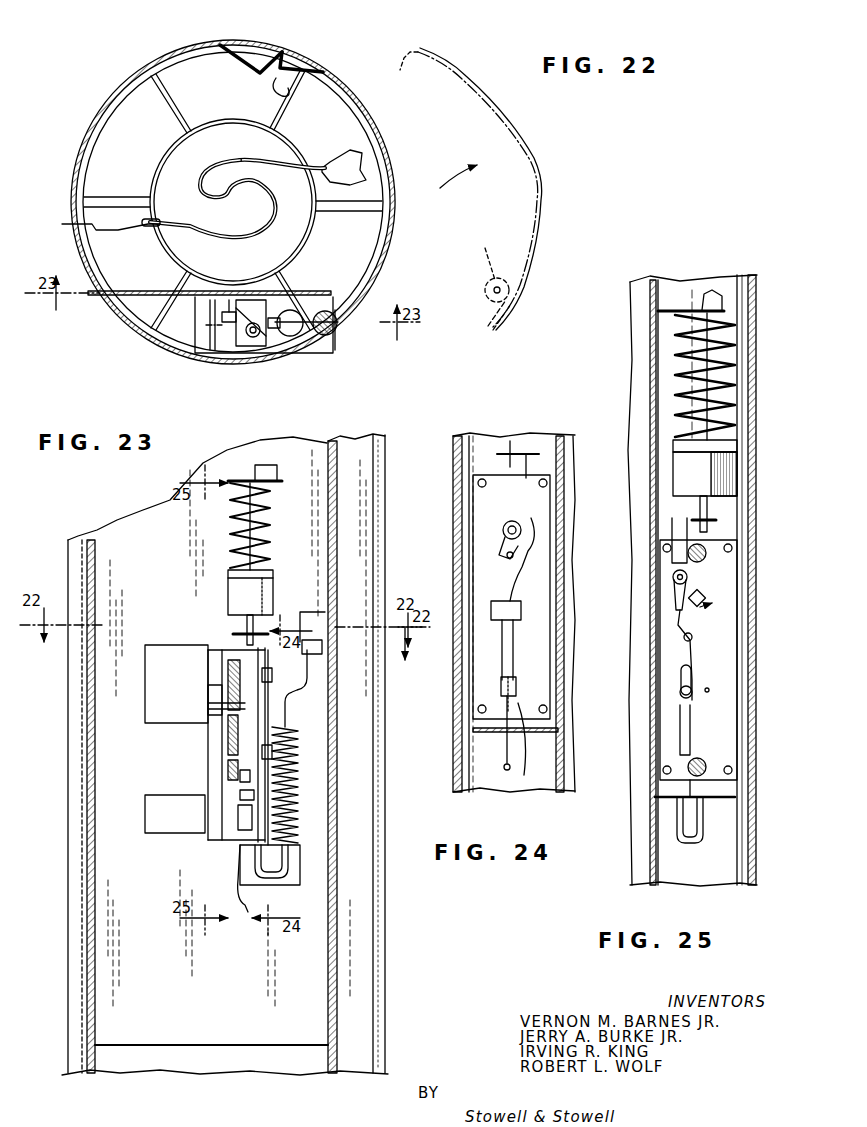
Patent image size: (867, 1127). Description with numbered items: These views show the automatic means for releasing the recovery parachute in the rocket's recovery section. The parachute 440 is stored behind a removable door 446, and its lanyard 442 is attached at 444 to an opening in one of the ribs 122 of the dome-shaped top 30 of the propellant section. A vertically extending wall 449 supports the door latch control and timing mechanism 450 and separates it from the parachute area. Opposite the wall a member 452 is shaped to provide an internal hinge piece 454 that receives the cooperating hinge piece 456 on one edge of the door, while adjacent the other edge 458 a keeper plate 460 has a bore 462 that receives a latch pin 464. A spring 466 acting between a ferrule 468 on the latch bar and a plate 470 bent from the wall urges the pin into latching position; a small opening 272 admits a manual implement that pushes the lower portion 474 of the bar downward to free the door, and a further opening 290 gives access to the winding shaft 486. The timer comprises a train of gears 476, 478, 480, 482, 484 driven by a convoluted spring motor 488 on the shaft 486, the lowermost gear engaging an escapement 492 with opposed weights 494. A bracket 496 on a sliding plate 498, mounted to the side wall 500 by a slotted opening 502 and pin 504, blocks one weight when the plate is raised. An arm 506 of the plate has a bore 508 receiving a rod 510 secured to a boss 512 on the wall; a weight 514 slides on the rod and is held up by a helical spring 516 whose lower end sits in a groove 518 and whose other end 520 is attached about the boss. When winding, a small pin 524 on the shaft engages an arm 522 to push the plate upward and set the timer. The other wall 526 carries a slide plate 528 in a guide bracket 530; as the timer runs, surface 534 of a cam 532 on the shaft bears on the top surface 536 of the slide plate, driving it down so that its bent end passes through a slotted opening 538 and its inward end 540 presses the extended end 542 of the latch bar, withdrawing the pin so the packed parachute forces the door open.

In FIG. 22, the top (dome) of the propellant charge containing section 30 is at (130, 148).
In FIG. 22, the rib 122 is at (62, 224).
In FIG. 22, the small opening 272 is at (302, 350).
In FIG. 22, the opening 290 is at (118, 330).
In FIG. 22, the parachute 440 is at (303, 174).
In FIG. 22, the lanyard 442 is at (205, 240).
In FIG. 22, the attachment point of lanyard 444 is at (218, 167).
In FIG. 22, the removable panel or door 446 is at (375, 136).
In FIG. 23, the removable panel or door 446 is at (368, 842).
In FIG. 22, the vertically extending wall 449 is at (122, 291).
In FIG. 23, the vertically extending wall 449 is at (134, 785).
In FIG. 25, the vertically extending wall 449 is at (650, 343).
In FIG. 22, the door latch control and timing mechanism 450 is at (213, 340).
In FIG. 22, the member 452 is at (240, 46).
In FIG. 22, the internal hinge piece 454 is at (285, 58).
In FIG. 22, the cooperating hinge piece 456 is at (285, 95).
In FIG. 22, the other edge of the door 458 is at (511, 316).
In FIG. 22, the keeper plate 460 is at (486, 253).
In FIG. 23, the keeper plate 460 is at (298, 668).
In FIG. 22, the bore (opening) in keeper plate 462 is at (486, 287).
In FIG. 23, the latch pin (latch bar) 464 is at (298, 619).
In FIG. 23, the spring 466 is at (298, 822).
In FIG. 23, the ferrule 468 is at (303, 688).
In FIG. 23, the plate 470 is at (300, 862).
In FIG. 23, the lower portion of the latch bar 474 is at (246, 914).
In FIG. 23, the first gear 476 is at (222, 702).
In FIG. 23, the gear 478 is at (222, 736).
In FIG. 23, the gear 480 is at (222, 720).
In FIG. 23, the gear 482 is at (240, 776).
In FIG. 23, the lowermost gear 484 is at (240, 794).
In FIG. 23, the shaft 486 is at (208, 690).
In FIG. 24, the shaft 486 is at (510, 521).
In FIG. 25, the shaft 486 is at (676, 592).
In FIG. 23, the spring type motor 488 is at (205, 648).
In FIG. 23, the escapement mechanism 492 is at (244, 835).
In FIG. 23, the escapement weights 494 is at (228, 762).
In FIG. 23, the bracket (arm) 496 is at (238, 828).
In FIG. 23, the sliding plate 498 is at (222, 745).
In FIG. 25, the sliding plate 498 is at (682, 657).
In FIG. 24, the side wall 500 is at (511, 597).
In FIG. 25, the side wall 500 is at (665, 760).
In FIG. 25, the slotted opening 502 is at (684, 682).
In FIG. 25, the pin 504 is at (684, 697).
In FIG. 22, the arm 506 is at (250, 346).
In FIG. 23, the arm 506 is at (240, 636).
In FIG. 25, the arm 506 is at (692, 520).
In FIG. 22, the bore 508 is at (258, 338).
In FIG. 22, the rod 510 is at (288, 298).
In FIG. 23, the rod 510 is at (270, 500).
In FIG. 25, the rod 510 is at (700, 510).
In FIG. 23, the boss 512 is at (268, 466).
In FIG. 25, the boss 512 is at (665, 300).
In FIG. 23, the weight 514 is at (268, 592).
In FIG. 25, the weight 514 is at (735, 488).
In FIG. 25, the helical spring 516 is at (730, 400).
In FIG. 25, the groove 518 is at (734, 450).
In FIG. 25, the other end of the spring 520 is at (712, 292).
In FIG. 22, the arm 522 is at (229, 300).
In FIG. 23, the arm 522 is at (228, 665).
In FIG. 25, the arm 522 is at (672, 576).
In FIG. 25, the small pin 524 is at (690, 600).
In FIG. 23, the other wall 526 is at (320, 680).
In FIG. 24, the other wall 526 is at (488, 688).
In FIG. 23, the slide plate 528 is at (270, 730).
In FIG. 24, the slide plate 528 is at (503, 633).
In FIG. 24, the guide bracket 530 is at (503, 606).
In FIG. 24, the cam 532 is at (500, 552).
In FIG. 24, the cam surface 534 is at (505, 523).
In FIG. 24, the top surface of slide plate 536 is at (526, 549).
In FIG. 23, the slotted opening 538 is at (255, 858).
In FIG. 24, the slotted opening 538 is at (480, 730).
In FIG. 23, the inward end of slide plate 540 is at (272, 878).
In FIG. 24, the extended end of the latch bar 542 is at (526, 742).